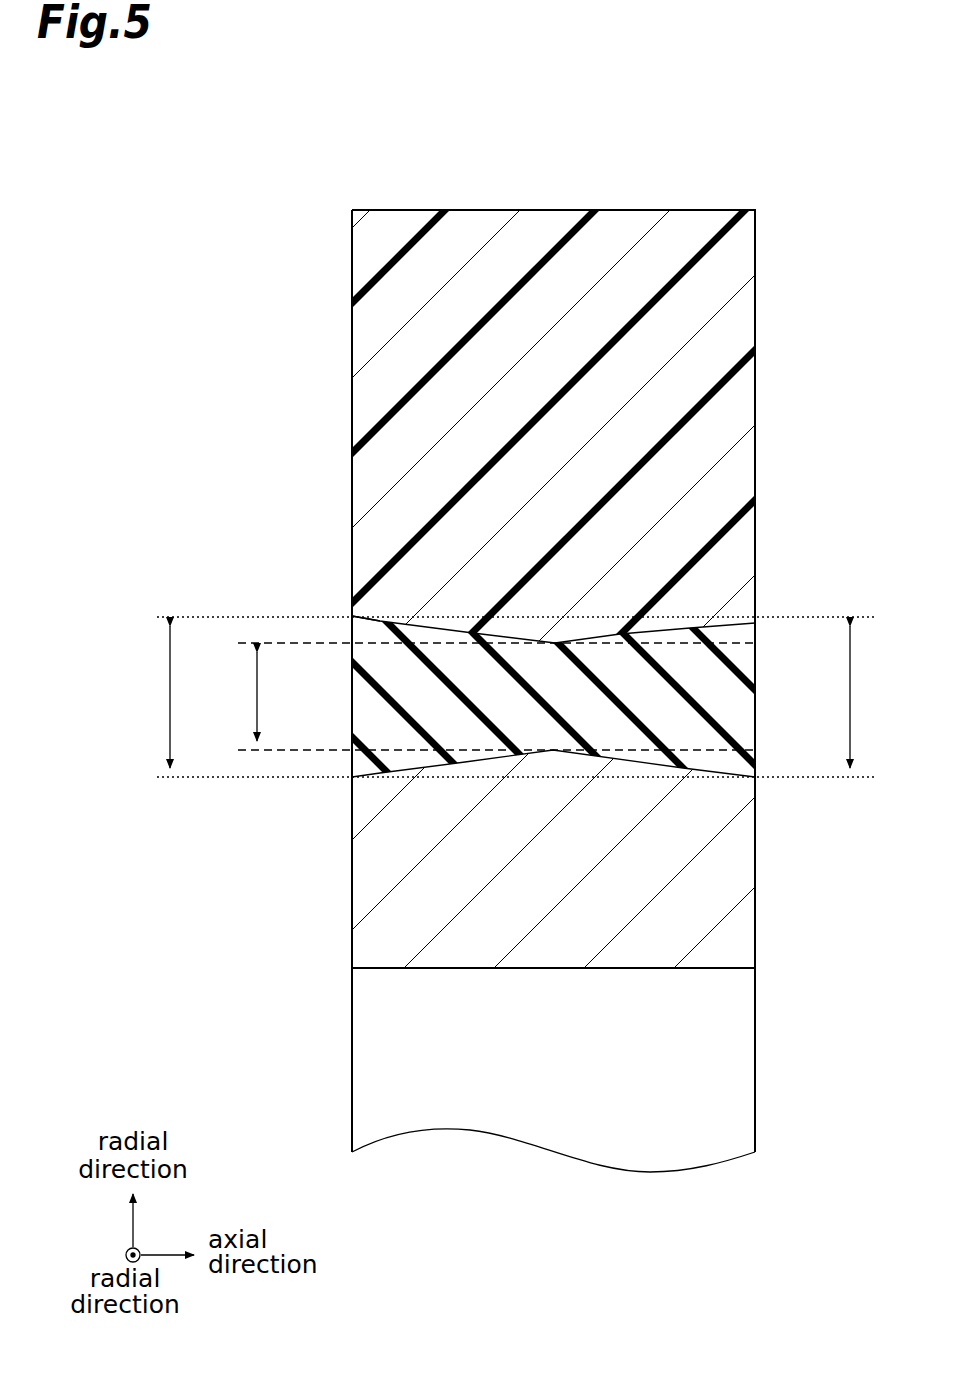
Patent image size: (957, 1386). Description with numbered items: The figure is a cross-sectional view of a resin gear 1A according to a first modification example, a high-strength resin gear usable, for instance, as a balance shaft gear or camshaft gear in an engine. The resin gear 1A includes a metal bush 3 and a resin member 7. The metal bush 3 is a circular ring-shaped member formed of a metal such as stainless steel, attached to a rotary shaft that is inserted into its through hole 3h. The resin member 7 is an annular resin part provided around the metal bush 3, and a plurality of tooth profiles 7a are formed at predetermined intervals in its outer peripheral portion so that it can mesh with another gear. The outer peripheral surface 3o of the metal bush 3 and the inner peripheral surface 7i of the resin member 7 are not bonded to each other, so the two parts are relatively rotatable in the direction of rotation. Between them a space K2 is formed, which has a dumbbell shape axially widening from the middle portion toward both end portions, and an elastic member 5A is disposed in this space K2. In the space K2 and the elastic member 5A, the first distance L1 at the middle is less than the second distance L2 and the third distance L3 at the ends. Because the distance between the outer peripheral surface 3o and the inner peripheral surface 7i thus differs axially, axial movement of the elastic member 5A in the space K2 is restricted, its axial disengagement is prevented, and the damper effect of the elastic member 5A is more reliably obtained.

The resin gear 1A is at (268, 236).
The tooth profile 7a is at (730, 211).
The resin member 7 is at (740, 397).
The inner peripheral surface 7i is at (730, 622).
The elastic member 5A is at (740, 706).
The outer peripheral surface 3o is at (717, 775).
The metal bush 3 is at (740, 860).
The through hole 3h is at (684, 1081).
The space K2 is at (358, 650).
The first distance L1 is at (238, 696).
The second distance L2 is at (151, 697).
The third distance L3 is at (870, 697).